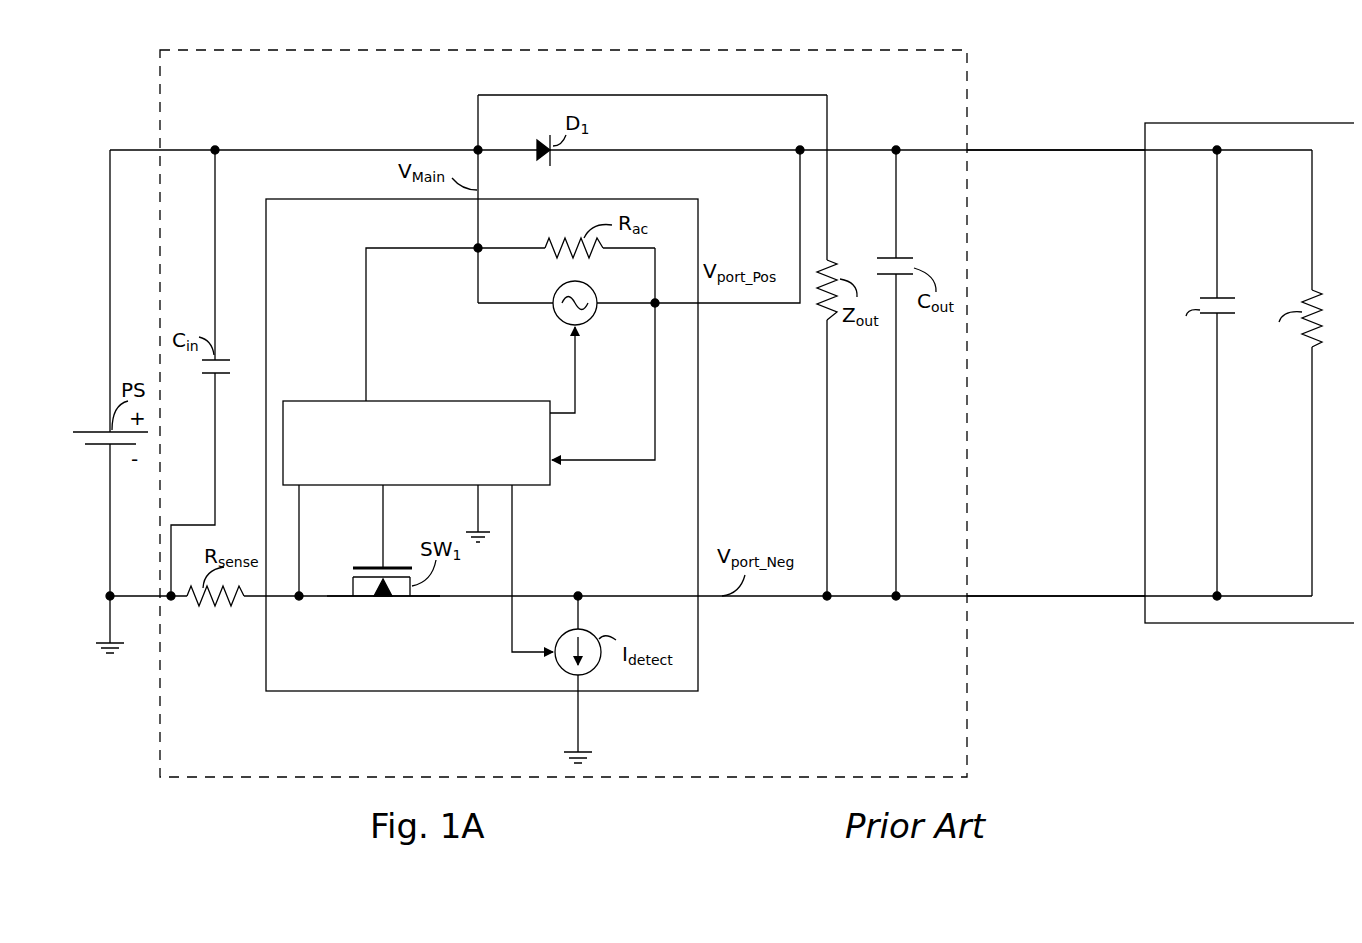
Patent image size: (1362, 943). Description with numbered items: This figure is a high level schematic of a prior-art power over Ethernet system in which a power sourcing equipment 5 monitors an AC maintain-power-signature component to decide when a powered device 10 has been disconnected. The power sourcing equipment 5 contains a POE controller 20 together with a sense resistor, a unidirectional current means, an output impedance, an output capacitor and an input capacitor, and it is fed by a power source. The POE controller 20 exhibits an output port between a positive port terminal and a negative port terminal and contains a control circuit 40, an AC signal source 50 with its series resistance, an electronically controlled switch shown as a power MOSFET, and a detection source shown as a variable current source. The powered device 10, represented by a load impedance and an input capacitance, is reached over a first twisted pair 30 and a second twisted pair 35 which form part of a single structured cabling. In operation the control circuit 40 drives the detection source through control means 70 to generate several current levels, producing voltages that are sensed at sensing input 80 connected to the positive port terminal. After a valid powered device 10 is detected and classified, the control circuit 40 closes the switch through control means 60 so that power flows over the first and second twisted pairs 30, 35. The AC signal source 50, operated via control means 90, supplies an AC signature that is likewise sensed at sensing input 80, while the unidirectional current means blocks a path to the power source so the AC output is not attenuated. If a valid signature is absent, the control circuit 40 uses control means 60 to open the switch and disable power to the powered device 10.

The power sourcing equipment 5 is at (968, 722).
The powered device 10 is at (1262, 625).
The POE controller 20 is at (453, 692).
The first twisted pair 30 is at (1008, 152).
The second twisted pair 35 is at (989, 596).
The control circuit 40 is at (466, 400).
The AC signal source 50 is at (553, 319).
The control means 60 is at (383, 540).
The control means 70 is at (513, 555).
The sensing input 80 is at (634, 460).
The control means 90 is at (577, 380).